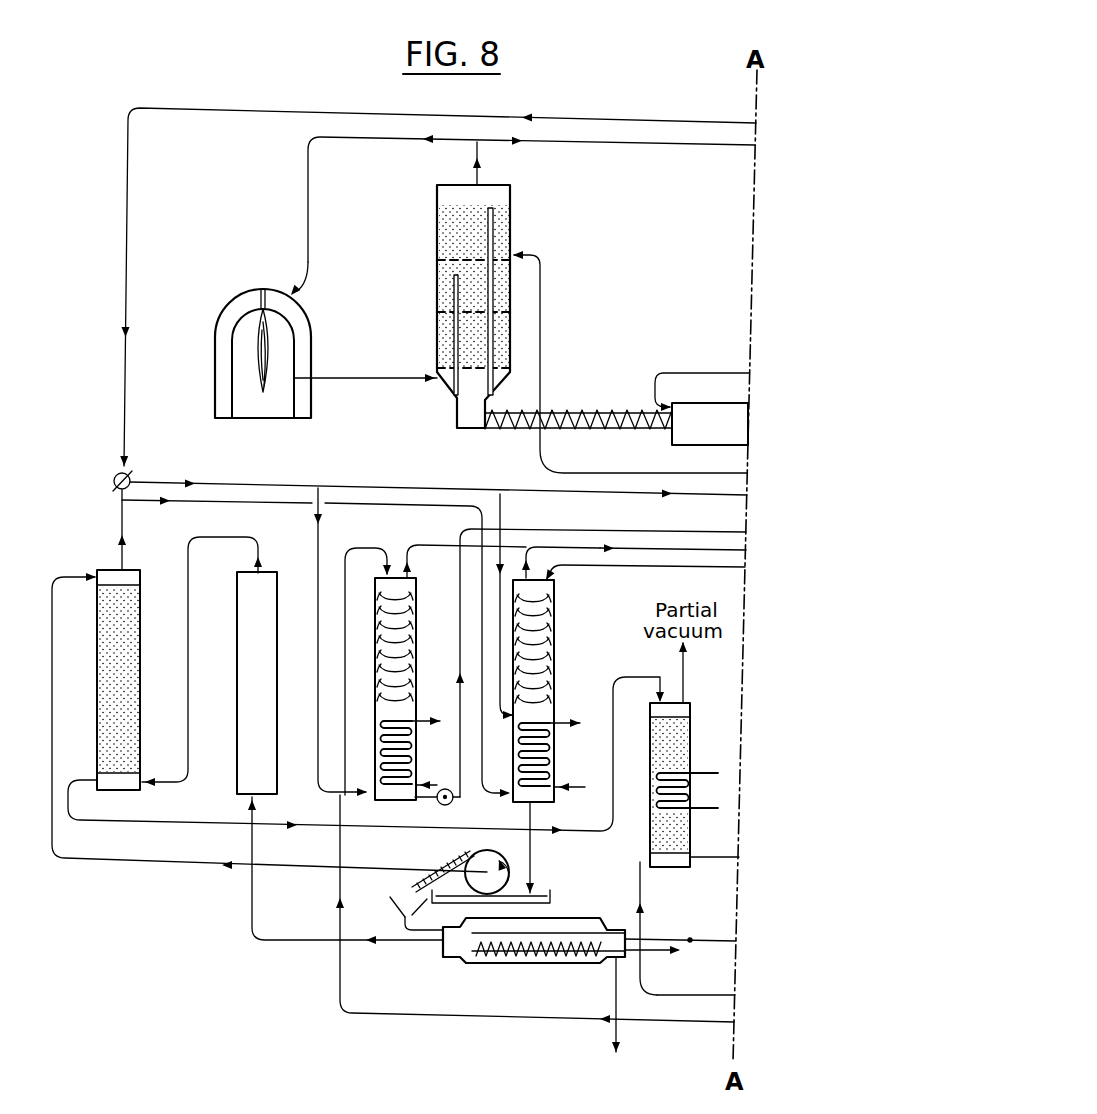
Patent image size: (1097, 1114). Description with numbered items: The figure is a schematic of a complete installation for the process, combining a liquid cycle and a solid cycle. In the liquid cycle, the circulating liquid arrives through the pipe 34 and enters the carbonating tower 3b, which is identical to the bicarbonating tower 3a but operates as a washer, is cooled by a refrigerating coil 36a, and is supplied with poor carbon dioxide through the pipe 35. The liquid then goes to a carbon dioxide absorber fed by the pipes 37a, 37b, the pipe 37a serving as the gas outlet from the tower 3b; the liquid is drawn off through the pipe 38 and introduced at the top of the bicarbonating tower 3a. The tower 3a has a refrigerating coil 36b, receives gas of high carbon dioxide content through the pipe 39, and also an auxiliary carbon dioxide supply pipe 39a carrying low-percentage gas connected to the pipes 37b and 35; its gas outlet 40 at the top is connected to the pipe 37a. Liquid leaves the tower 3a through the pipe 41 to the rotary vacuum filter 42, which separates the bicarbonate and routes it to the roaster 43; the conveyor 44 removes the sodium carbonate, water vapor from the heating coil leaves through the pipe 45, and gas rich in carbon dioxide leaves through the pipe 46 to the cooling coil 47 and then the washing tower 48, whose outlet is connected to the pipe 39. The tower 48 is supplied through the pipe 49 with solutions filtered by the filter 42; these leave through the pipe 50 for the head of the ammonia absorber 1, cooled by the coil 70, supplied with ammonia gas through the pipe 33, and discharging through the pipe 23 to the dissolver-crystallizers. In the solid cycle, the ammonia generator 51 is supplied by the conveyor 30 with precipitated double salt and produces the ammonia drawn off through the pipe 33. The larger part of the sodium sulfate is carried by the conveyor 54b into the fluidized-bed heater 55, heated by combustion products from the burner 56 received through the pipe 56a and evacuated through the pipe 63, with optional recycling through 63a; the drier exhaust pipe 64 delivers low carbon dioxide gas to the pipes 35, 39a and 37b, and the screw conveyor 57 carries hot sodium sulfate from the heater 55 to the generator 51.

The pipe 64 is at (438, 282).
The pipe 63 is at (531, 198).
The recycle line 63a is at (285, 249).
The heater 55 is at (512, 228).
The conveyor 54b is at (630, 363).
The burner 56 is at (300, 336).
The pipe 56a is at (365, 368).
The screw conveyor 57 is at (555, 418).
The conveyor 30 is at (702, 379).
The ammonia generator 51 is at (710, 424).
The pipe 39 is at (314, 643).
The pipe 35 is at (327, 642).
The auxiliary carbon dioxide supply pipe 39a is at (521, 606).
The gas outlet 40 is at (528, 551).
The pipe 37a is at (601, 650).
The pipe 37b is at (690, 549).
The pipe 38 is at (645, 568).
The washing tower 48 is at (133, 668).
The cooling coil 47 is at (236, 667).
The pipe 49 is at (269, 722).
The pipe 50 is at (366, 763).
The carbonating tower 3b is at (416, 635).
The refrigerating coil 36a is at (427, 717).
The bicarbonating tower 3a is at (554, 648).
The refrigerating coil 36b is at (572, 720).
The pipe 41 is at (545, 847).
The rotary vacuum filter 42 is at (486, 864).
The roaster 43 is at (525, 932).
The pipe 46 is at (345, 870).
The conveyor 44 is at (620, 1022).
The pipe 45 is at (660, 952).
The pipe 33 is at (680, 968).
The pipe 34 is at (535, 909).
The ammonia absorber 1 is at (692, 818).
The coil 70 is at (703, 771).
The pipe 23 is at (714, 870).